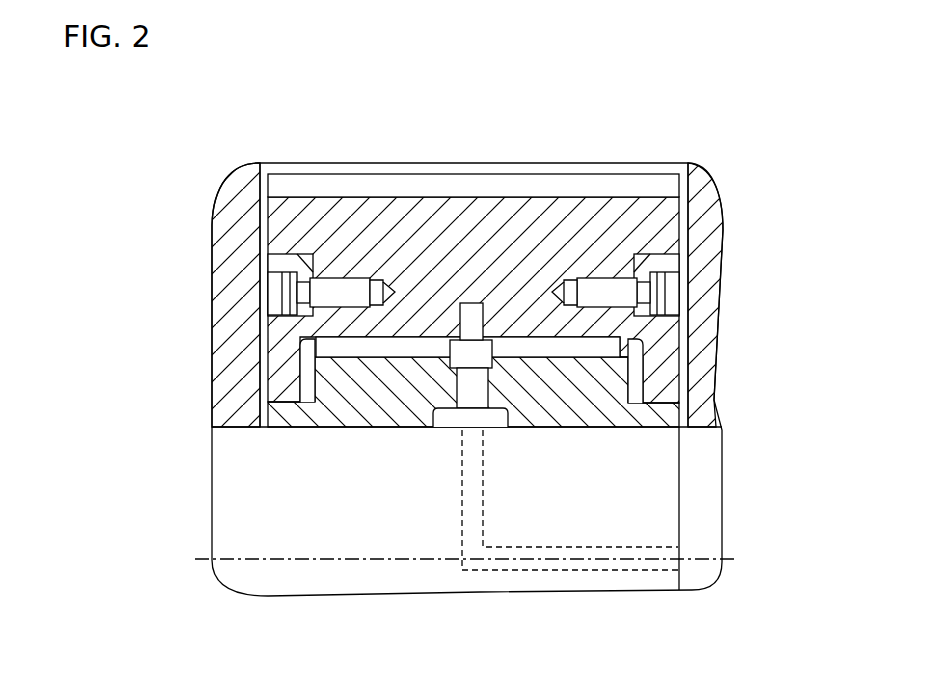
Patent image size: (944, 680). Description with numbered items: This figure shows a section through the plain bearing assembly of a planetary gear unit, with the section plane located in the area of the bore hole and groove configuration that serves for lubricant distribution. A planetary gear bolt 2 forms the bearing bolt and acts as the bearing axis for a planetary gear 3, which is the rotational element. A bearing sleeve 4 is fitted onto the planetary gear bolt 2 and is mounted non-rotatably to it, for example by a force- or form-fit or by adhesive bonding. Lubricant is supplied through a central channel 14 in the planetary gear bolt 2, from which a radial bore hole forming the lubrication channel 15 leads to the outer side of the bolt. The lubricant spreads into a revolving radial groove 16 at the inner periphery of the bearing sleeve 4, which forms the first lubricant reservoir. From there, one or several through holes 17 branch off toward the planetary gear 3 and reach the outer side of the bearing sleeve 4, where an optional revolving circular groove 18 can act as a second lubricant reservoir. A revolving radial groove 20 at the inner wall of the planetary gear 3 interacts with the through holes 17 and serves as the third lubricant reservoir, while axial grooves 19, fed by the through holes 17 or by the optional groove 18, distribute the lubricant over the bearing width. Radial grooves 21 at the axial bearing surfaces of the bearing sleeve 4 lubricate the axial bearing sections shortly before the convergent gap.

The planetary gear bolt 2 is at (650, 500).
The planetary gear 3 is at (572, 213).
The bearing sleeve 4 is at (655, 423).
The central channel 14 is at (620, 572).
The lubrication channel 15 is at (462, 507).
The radial groove 16 is at (447, 415).
The through holes 17 is at (463, 388).
The circular groove 18 is at (300, 382).
The axial grooves 19 is at (295, 326).
The radial groove 20 is at (473, 302).
The radial grooves 21 is at (313, 355).